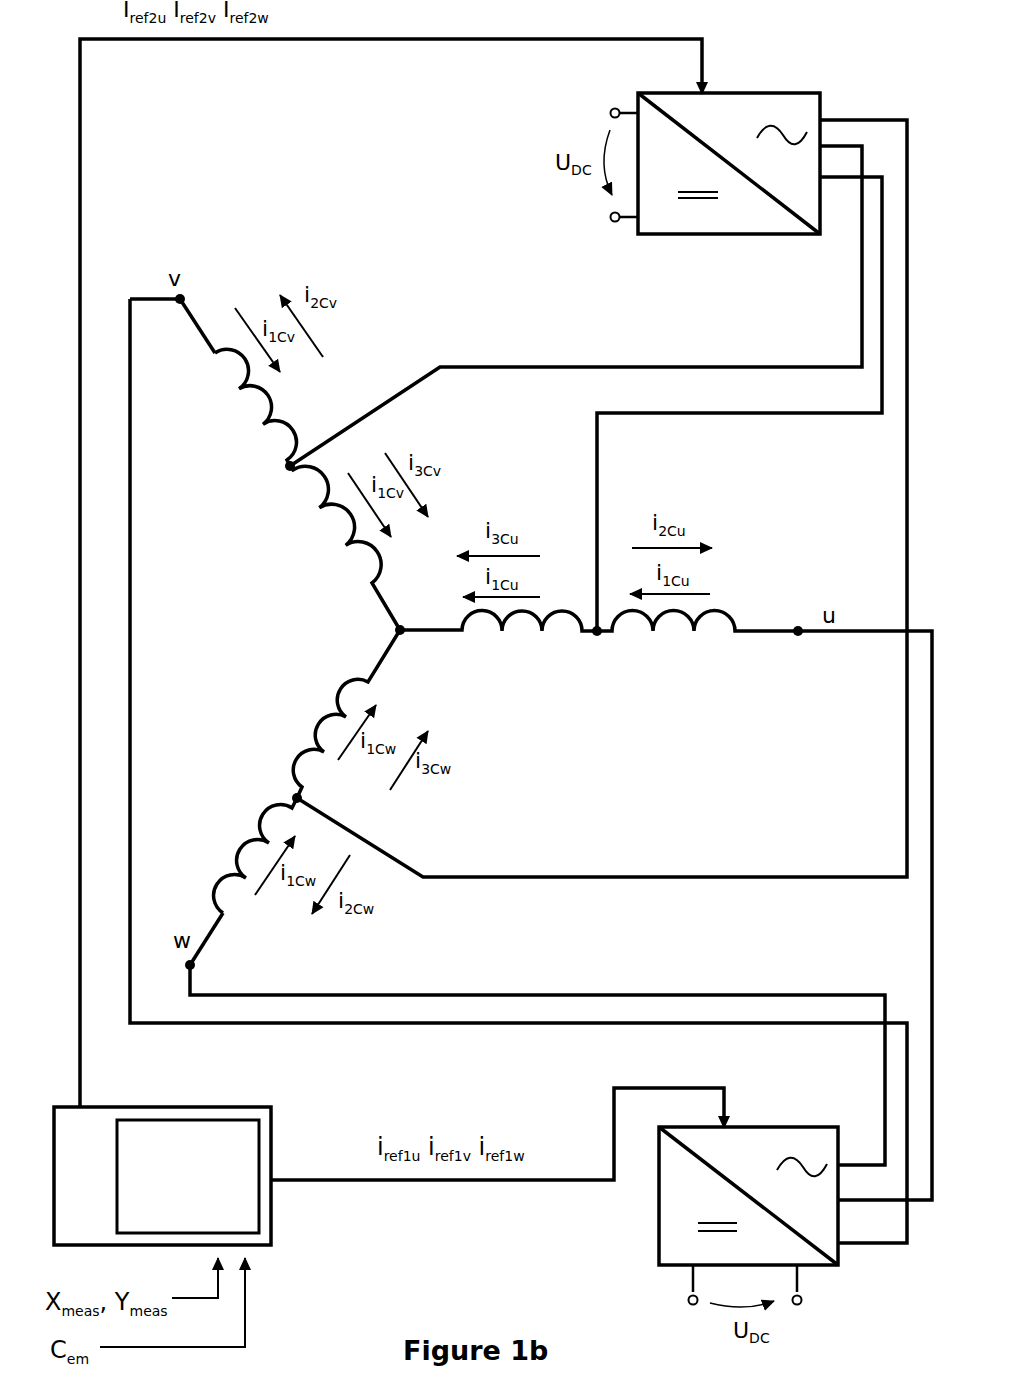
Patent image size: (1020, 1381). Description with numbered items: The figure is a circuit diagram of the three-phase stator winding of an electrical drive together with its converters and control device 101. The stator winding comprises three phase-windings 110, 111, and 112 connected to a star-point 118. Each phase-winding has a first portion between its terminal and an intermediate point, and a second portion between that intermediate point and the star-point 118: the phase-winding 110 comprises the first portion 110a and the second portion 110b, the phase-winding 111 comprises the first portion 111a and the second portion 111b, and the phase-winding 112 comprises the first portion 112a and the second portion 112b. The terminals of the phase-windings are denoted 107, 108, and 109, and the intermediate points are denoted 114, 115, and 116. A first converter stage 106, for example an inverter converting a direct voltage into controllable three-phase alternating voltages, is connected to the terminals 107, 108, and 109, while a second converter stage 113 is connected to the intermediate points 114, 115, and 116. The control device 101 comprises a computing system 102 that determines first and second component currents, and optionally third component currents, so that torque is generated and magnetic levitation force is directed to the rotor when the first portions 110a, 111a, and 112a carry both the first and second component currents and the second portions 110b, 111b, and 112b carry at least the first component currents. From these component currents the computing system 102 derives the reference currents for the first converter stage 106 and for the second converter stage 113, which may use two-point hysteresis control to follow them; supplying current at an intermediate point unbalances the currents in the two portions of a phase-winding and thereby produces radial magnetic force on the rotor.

The control device 101 is at (273, 1137).
The computing system 102 is at (188, 1176).
The first converter stage 106 is at (659, 1201).
The terminal of phase-winding 107 is at (799, 629).
The terminal of phase-winding 108 is at (182, 297).
The terminal of phase-winding 109 is at (193, 966).
The phase-winding 110 is at (599, 676).
The first portion 110a is at (697, 654).
The second portion 110b is at (498, 653).
The phase-winding 111 is at (265, 465).
The first portion 111a is at (238, 387).
The second portion 111b is at (335, 548).
The phase-winding 112 is at (265, 797).
The first portion 112a is at (239, 876).
The second portion 112b is at (331, 714).
The second converter stage 113 is at (760, 93).
The intermediate point of phase-winding 114 is at (595, 630).
The intermediate point of phase-winding 115 is at (293, 464).
The intermediate point of phase-winding 116 is at (300, 799).
The star-point 118 is at (403, 628).